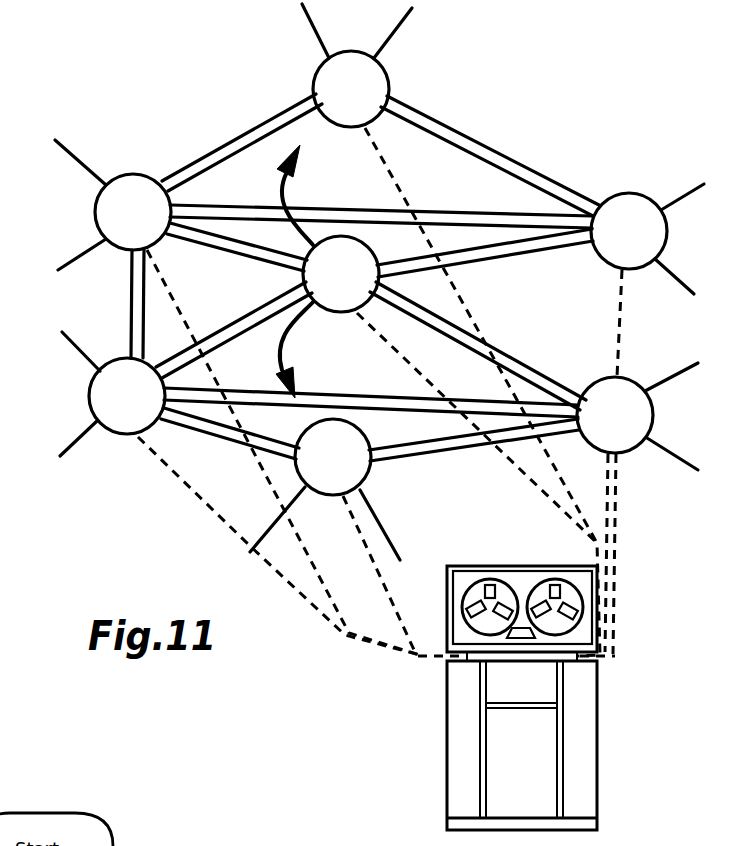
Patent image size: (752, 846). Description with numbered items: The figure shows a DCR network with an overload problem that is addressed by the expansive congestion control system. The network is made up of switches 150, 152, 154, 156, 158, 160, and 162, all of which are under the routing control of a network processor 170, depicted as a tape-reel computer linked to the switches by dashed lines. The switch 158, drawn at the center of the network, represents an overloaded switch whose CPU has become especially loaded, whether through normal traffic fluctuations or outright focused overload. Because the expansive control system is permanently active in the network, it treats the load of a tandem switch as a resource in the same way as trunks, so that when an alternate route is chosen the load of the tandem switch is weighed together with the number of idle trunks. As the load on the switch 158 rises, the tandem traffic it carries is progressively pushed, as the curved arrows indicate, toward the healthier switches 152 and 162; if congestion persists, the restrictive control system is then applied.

The switch 150 is at (129, 174).
The switch 152 is at (385, 71).
The switch 154 is at (627, 192).
The switch 156 is at (89, 399).
The overloaded switch 158 is at (335, 312).
The switch 160 is at (617, 377).
The switch 162 is at (362, 480).
The network processor 170 is at (597, 741).